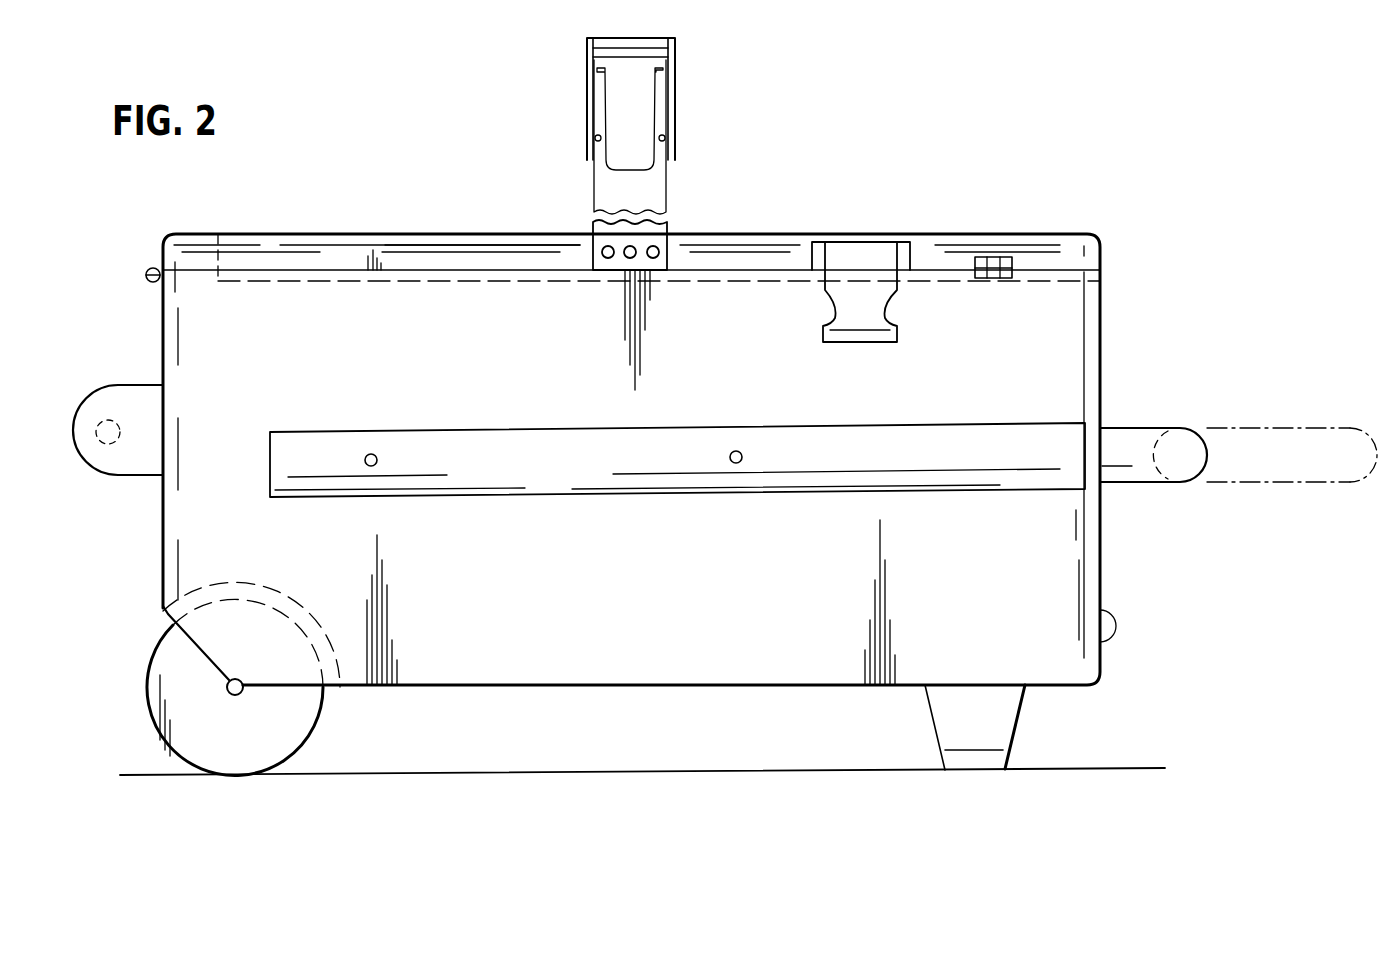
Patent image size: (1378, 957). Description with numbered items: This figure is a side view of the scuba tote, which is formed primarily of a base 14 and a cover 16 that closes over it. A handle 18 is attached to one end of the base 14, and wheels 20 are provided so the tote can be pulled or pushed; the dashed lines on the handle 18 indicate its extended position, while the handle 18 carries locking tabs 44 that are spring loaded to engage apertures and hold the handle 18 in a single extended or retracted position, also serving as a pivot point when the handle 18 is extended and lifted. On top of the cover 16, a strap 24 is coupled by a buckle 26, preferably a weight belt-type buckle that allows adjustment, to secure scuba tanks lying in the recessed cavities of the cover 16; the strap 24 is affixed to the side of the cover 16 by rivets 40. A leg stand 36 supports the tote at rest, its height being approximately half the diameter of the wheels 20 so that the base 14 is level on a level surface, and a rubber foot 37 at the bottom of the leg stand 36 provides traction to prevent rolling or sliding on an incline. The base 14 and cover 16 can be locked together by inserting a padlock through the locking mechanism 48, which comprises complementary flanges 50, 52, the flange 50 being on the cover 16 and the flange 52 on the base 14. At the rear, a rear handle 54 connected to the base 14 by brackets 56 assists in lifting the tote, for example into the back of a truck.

The base 14 is at (1080, 538).
The cover 16 is at (308, 250).
The handle 18 is at (1130, 437).
The wheels 20 is at (305, 712).
The strap 24 is at (592, 182).
The buckle 26 is at (675, 82).
The leg stand 36 is at (1003, 717).
The rubber foot 37 is at (957, 757).
The rivets 40 is at (608, 258).
The locking tabs 44 is at (365, 466).
The locking mechanism 48 is at (980, 256).
The flange 50 is at (1010, 256).
The flange 52 is at (146, 277).
The rear handle 54 is at (101, 443).
The brackets 56 is at (105, 385).